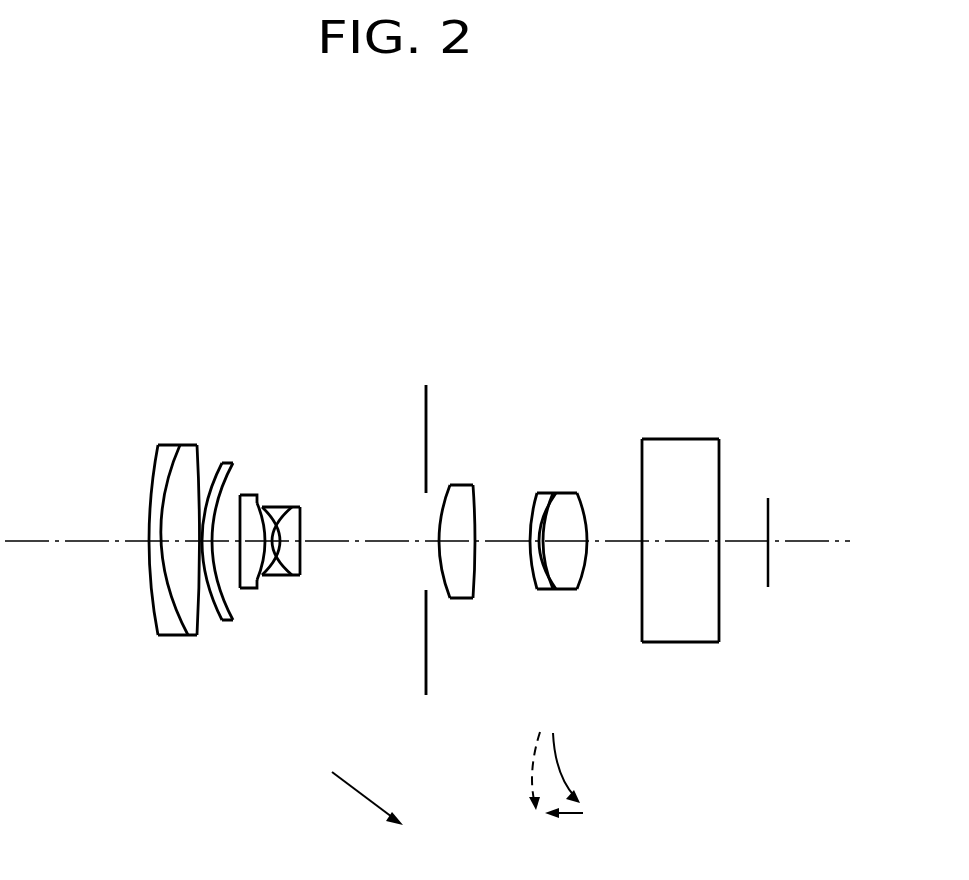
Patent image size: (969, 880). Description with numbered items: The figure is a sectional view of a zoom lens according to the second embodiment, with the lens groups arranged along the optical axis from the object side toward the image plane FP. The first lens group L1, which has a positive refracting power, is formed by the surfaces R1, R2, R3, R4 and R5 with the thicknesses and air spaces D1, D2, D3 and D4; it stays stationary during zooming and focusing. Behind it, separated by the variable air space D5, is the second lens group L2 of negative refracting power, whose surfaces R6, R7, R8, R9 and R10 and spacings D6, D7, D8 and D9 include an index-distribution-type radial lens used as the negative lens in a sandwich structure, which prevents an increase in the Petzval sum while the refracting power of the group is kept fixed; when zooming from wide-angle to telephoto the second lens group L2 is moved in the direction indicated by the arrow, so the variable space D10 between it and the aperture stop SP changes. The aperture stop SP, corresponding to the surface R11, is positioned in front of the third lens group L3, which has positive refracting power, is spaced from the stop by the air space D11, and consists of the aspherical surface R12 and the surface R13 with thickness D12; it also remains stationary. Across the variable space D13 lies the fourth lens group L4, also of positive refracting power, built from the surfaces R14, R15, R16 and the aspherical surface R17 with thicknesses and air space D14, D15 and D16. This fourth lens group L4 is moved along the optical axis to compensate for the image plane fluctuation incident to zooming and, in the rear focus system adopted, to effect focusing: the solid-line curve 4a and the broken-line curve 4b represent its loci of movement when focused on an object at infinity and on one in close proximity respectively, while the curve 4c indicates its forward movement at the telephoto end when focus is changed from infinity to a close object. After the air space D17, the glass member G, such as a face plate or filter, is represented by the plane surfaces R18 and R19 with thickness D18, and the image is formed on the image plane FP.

The first lens group L1 is at (143, 287).
The second lens group L2 is at (388, 283).
The third lens group L3 is at (517, 283).
The fourth lens group L4 is at (620, 283).
The glass member G is at (747, 287).
The aperture stop SP is at (422, 492).
The image plane FP is at (768, 512).
The first lens surface R1 is at (156, 447).
The second lens surface R2 is at (176, 446).
The third lens surface R3 is at (197, 446).
The fourth lens surface R4 is at (222, 462).
The fifth lens surface R5 is at (233, 462).
The sixth lens surface R6 is at (241, 494).
The seventh lens surface R7 is at (259, 503).
The eighth lens surface R8 is at (265, 509).
The ninth lens surface R9 is at (290, 509).
The tenth lens surface R10 is at (301, 511).
The stop surface R11 is at (426, 393).
The twelfth lens surface R12 is at (446, 487).
The thirteenth lens surface R13 is at (475, 490).
The fourteenth lens surface R14 is at (535, 493).
The fifteenth lens surface R15 is at (542, 520).
The sixteenth lens surface R16 is at (556, 495).
The seventeenth lens surface R17 is at (582, 497).
The filter surface R18 is at (641, 465).
The filter surface R19 is at (720, 465).
The first lens thickness D1 is at (170, 638).
The second lens thickness D2 is at (192, 638).
The third air space D3 is at (208, 640).
The fourth lens thickness D4 is at (228, 622).
The fifth air space D5 is at (237, 605).
The sixth lens thickness D6 is at (250, 595).
The seventh air space D7 is at (262, 592).
The eighth lens thickness D8 is at (279, 578).
The ninth lens thickness D9 is at (297, 575).
The tenth air space D10 is at (386, 552).
The eleventh air space D11 is at (435, 552).
The twelfth lens thickness D12 is at (465, 600).
The thirteenth air space D13 is at (495, 548).
The fourteenth lens thickness D14 is at (543, 591).
The fifteenth air space D15 is at (555, 590).
The sixteenth lens thickness D16 is at (563, 588).
The seventeenth air space D17 is at (618, 543).
The glass member thickness D18 is at (677, 545).
The solid-line curve 4a is at (557, 760).
The broken-line curve 4b is at (528, 768).
The curve 4c is at (572, 814).